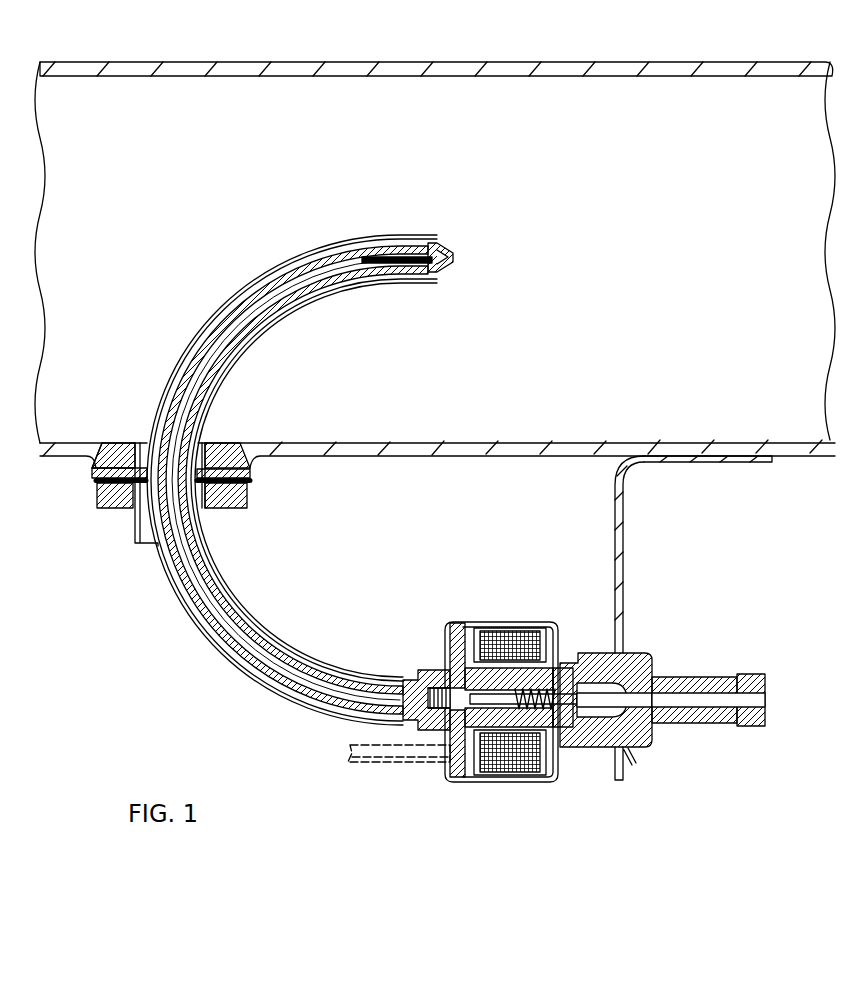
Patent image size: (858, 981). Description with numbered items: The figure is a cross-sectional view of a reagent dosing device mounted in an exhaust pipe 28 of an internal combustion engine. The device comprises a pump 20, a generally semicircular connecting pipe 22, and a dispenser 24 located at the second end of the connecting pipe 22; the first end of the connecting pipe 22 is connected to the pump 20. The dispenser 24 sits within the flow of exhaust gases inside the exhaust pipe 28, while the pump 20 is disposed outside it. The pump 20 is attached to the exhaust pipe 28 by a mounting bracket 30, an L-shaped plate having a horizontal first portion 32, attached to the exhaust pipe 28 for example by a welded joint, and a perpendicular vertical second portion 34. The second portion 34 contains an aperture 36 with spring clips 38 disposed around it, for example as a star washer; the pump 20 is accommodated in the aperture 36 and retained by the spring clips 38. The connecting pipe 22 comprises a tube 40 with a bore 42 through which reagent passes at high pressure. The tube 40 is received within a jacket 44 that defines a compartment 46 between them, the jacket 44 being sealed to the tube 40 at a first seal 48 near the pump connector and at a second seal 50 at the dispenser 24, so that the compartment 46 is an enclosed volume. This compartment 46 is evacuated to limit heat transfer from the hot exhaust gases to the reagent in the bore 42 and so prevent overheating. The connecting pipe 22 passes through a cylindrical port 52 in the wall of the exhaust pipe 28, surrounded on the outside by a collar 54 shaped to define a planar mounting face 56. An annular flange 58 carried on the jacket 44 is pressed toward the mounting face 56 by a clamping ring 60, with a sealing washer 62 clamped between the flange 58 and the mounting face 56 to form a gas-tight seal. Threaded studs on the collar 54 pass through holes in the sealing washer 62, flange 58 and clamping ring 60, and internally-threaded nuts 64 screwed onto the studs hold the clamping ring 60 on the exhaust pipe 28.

The pump 20 is at (556, 731).
The connecting pipe 22 is at (291, 457).
The dispenser 24 is at (428, 222).
The exhaust pipe 28 is at (333, 70).
The mounting bracket 30 is at (658, 554).
The first portion 32 is at (745, 463).
The second portion 34 is at (625, 578).
The aperture 36 is at (615, 749).
The spring clips 38 is at (636, 756).
The tube 40 is at (254, 667).
The bore 42 is at (306, 688).
The jacket 44 is at (175, 601).
The compartment 46 is at (262, 630).
The first seal 48 is at (410, 680).
The second seal 50 is at (438, 236).
The port 52 is at (212, 450).
The collar 54 is at (128, 452).
The mounting face 56 is at (105, 462).
The annular flange 58 is at (250, 482).
The clamping ring 60 is at (100, 500).
The sealing washer 62 is at (95, 476).
The internally-threaded nuts 64 is at (137, 505).